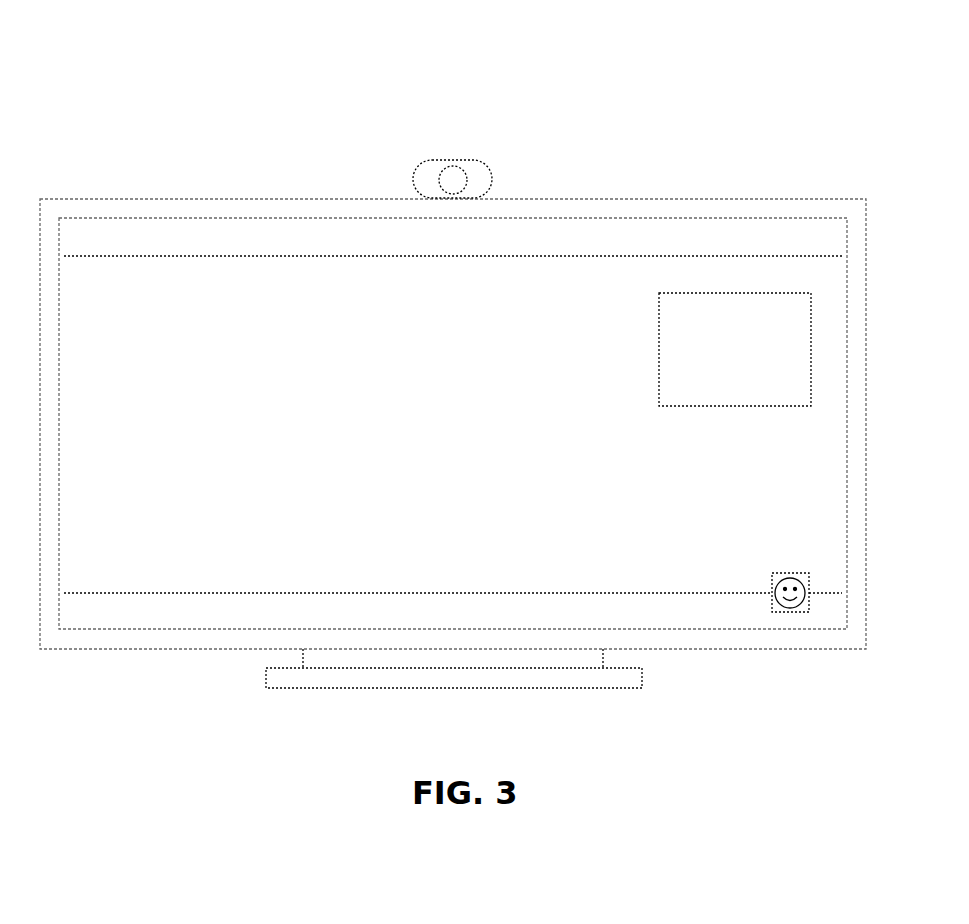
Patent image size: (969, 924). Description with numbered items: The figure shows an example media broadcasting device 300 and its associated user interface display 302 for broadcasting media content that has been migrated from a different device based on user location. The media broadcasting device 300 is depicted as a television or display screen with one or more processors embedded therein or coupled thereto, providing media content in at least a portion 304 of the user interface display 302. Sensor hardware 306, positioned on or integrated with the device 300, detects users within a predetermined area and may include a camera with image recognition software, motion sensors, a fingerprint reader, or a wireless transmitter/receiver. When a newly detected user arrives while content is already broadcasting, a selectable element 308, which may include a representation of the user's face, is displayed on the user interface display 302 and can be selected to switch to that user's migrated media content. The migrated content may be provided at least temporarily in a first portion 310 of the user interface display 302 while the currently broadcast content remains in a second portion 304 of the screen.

The media broadcasting device 300 is at (598, 118).
The user interface display 302 is at (88, 237).
The portion of user interface display 304 is at (247, 312).
The sensor hardware 306 is at (437, 158).
The selectable element 308 is at (780, 612).
The first portion of user interface display 310 is at (727, 313).